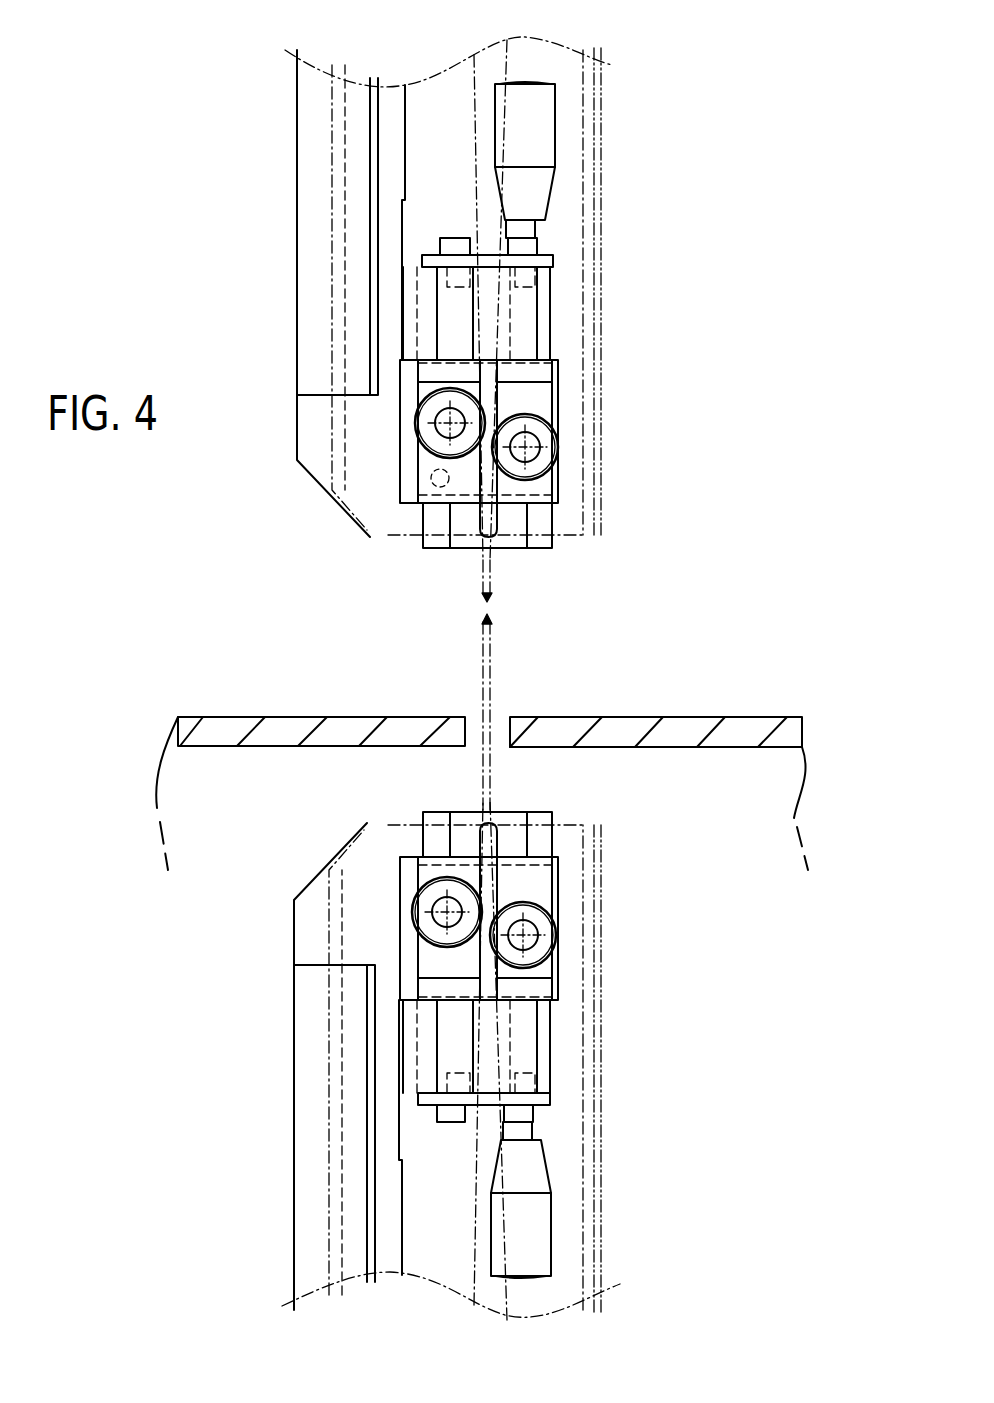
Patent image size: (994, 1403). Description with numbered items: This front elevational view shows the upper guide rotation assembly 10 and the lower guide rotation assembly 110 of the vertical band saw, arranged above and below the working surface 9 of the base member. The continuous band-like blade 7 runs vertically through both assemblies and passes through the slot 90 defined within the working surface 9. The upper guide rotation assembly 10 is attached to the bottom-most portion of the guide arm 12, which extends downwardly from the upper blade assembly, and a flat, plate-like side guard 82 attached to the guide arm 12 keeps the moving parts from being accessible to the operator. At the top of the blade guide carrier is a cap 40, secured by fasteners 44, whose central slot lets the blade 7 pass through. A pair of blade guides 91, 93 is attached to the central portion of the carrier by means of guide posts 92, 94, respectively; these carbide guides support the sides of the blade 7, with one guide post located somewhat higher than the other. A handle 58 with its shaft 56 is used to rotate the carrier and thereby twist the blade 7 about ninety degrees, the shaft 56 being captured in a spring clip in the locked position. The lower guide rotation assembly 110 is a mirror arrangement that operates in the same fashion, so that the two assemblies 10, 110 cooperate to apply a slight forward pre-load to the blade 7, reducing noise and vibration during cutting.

The blade 7 is at (494, 640).
The working surface 9 is at (690, 717).
The upper guide rotation assembly 10 is at (650, 340).
The guide arm 12 is at (312, 112).
The cap 40 is at (428, 256).
The fasteners 44 is at (527, 236).
The shaft 56 is at (540, 233).
The handle 58 is at (545, 120).
The side guard 82 is at (540, 42).
The slot 90 is at (509, 731).
The blade guide 91 is at (417, 413).
The guide post 92 is at (440, 433).
The blade guide 93 is at (556, 455).
The guide post 94 is at (542, 447).
The lower guide rotation assembly 110 is at (647, 1002).